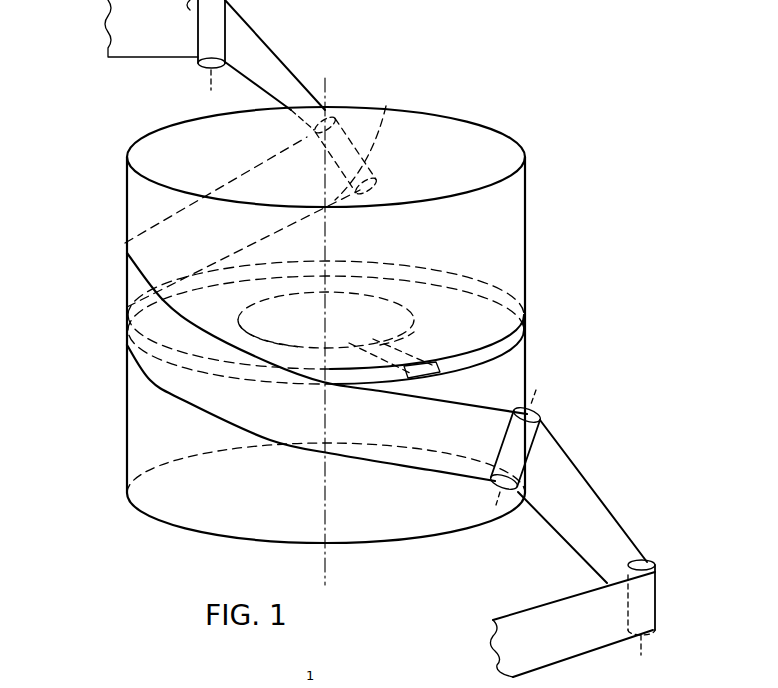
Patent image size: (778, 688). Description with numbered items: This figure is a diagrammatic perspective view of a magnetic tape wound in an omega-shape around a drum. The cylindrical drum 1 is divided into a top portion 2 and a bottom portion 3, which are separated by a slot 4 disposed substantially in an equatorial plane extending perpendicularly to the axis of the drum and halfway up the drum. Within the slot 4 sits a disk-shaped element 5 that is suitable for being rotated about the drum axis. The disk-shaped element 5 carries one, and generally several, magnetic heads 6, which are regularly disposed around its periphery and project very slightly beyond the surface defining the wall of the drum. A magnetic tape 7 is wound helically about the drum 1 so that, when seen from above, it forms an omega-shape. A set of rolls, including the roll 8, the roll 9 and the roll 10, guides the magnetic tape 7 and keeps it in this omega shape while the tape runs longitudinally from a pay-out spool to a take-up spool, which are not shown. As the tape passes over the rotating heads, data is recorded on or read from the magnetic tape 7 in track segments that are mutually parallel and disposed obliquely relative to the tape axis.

The cylindrical drum 1 is at (118, 208).
The top portion 2 is at (510, 237).
The bottom portion 3 is at (128, 430).
The slot 4 is at (502, 348).
The disk-shaped element 5 is at (410, 322).
The magnetic heads 6 is at (433, 380).
The magnetic tape 7 is at (284, 54).
The roll 8 is at (650, 562).
The roll 9 is at (518, 444).
The roll 10 is at (379, 112).